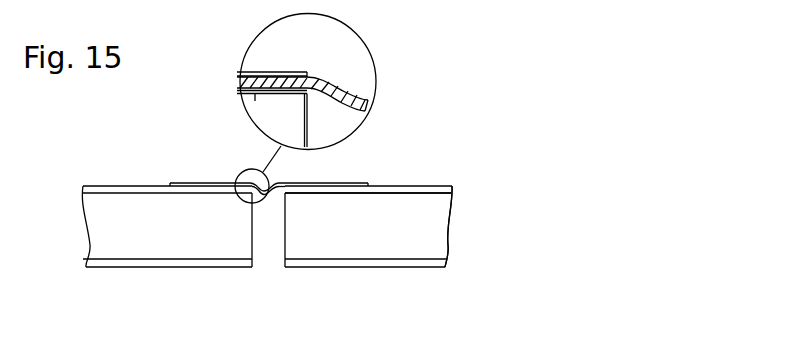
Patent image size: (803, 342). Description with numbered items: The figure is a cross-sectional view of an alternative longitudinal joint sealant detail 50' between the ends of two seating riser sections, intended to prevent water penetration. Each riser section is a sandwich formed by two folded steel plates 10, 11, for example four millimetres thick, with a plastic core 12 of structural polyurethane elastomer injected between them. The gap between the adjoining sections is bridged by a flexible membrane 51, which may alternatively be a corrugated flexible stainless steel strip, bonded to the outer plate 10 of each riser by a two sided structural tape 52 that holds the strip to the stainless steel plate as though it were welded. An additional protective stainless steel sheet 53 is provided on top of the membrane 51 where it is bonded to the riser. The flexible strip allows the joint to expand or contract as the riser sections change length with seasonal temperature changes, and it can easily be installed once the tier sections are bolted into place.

The folded plate 10 is at (403, 188).
The folded plate 11 is at (413, 268).
The plastic core 12 is at (440, 222).
The longitudinal joint sealant detail 50' is at (332, 109).
The flexible membrane 51 is at (247, 86).
The two sided structural tape 52 is at (256, 108).
The protective stainless steel sheet 53 is at (270, 72).